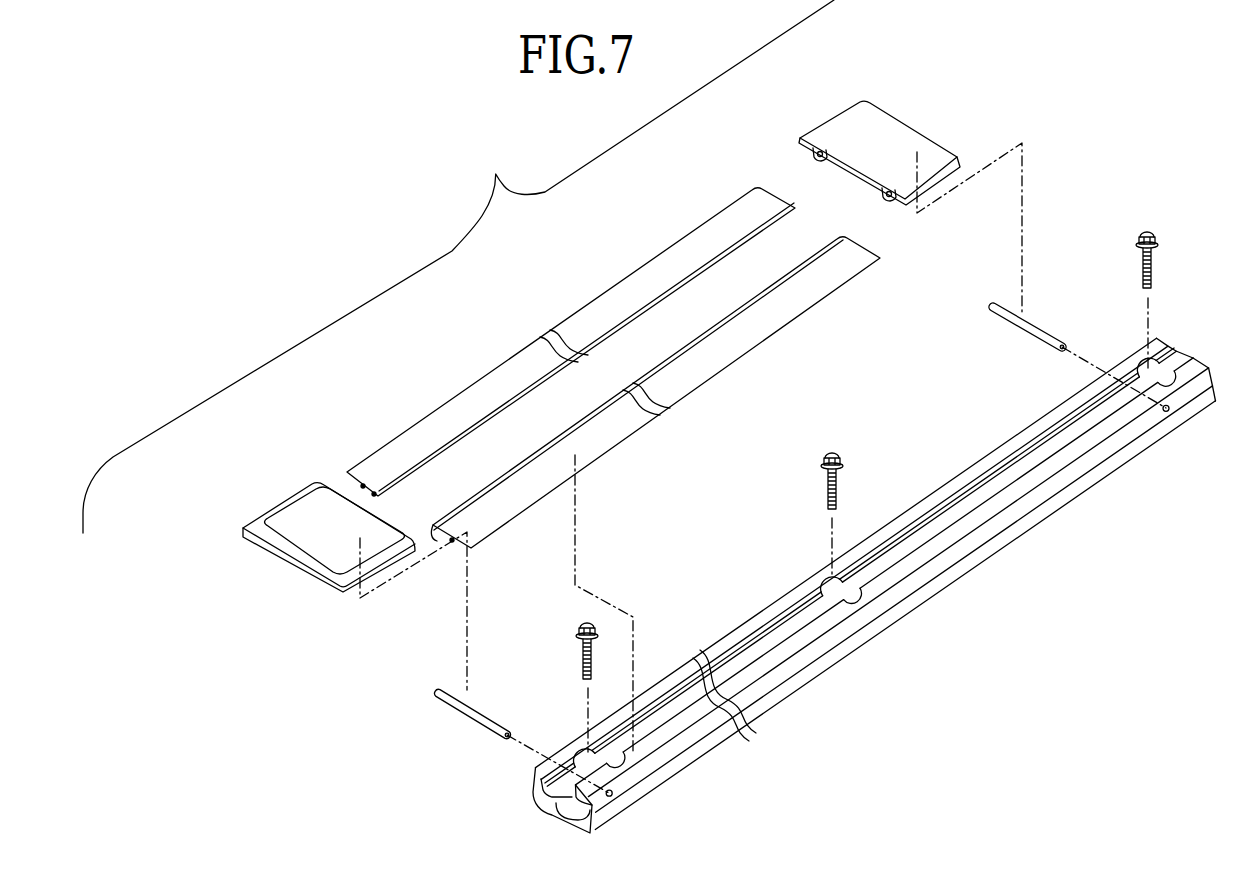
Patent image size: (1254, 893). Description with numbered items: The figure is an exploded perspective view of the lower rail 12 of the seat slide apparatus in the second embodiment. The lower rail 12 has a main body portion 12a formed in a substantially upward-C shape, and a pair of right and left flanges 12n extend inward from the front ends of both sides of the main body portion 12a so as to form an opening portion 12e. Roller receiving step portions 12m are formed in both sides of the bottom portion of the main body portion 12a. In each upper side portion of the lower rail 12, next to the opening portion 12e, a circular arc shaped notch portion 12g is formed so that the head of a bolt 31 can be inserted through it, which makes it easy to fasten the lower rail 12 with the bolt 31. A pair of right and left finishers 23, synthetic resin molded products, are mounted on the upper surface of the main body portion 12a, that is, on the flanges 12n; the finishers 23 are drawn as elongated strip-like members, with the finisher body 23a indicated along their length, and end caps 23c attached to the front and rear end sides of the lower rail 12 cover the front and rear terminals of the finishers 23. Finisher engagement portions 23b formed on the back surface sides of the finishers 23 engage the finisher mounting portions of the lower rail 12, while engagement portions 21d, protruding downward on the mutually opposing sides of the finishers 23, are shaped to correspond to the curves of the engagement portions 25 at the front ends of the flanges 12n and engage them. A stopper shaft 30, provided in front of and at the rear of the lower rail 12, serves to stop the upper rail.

The lower rail 12 is at (948, 593).
The main body portion 12a is at (780, 683).
The opening portion 12e is at (768, 640).
The notch portion 12g is at (1170, 373).
The roller receiving step portion 12m is at (582, 832).
The flange 12n is at (1030, 427).
The engagement portion 21d is at (433, 538).
The finisher 23 is at (497, 492).
The slide strip 23a is at (667, 353).
The finisher engagement portion 23b is at (363, 486).
The end cap 23c is at (853, 128).
The engagement portion 25 is at (535, 782).
The stopper shaft 30 is at (1017, 332).
The bolt 31 is at (1140, 233).